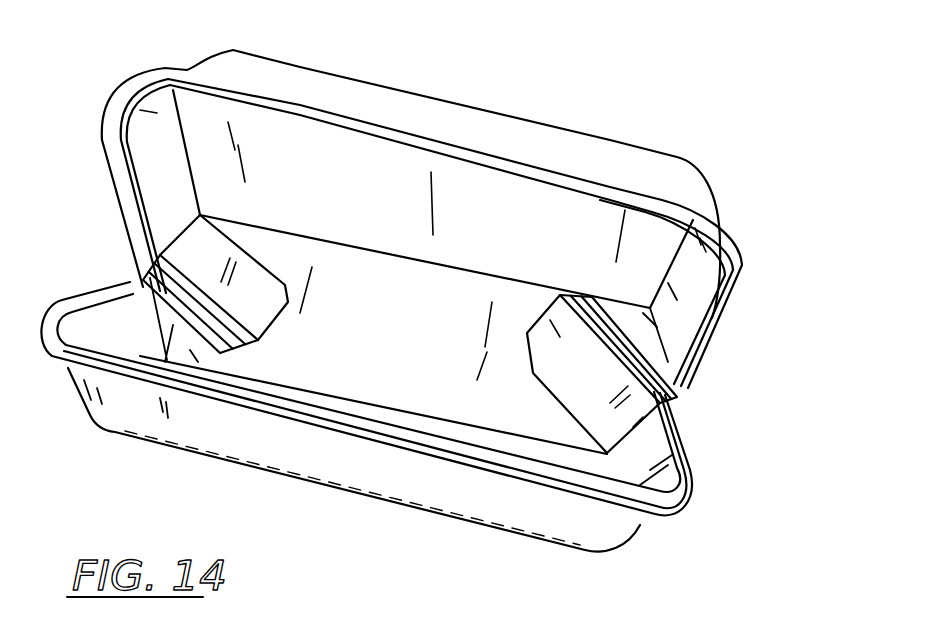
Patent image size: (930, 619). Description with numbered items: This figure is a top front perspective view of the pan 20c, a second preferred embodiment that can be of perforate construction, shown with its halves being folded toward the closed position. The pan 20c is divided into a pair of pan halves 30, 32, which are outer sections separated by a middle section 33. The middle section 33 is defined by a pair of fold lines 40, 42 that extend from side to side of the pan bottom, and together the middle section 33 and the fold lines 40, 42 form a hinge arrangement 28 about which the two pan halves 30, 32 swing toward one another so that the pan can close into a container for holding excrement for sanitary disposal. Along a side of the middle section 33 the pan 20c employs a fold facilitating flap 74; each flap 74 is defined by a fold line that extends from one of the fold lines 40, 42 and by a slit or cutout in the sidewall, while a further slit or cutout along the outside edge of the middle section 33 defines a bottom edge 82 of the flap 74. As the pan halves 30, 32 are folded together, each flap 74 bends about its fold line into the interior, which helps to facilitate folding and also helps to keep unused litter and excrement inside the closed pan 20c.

The pan 20c is at (574, 34).
The hinge arrangement 28 is at (436, 430).
The pan half 30 is at (428, 201).
The pan half 32 is at (528, 452).
The middle section 33 is at (397, 342).
The fold line 40 is at (458, 270).
The fold line 42 is at (423, 417).
The fold facilitating flap 74 is at (197, 348).
The bottom edge 82 is at (253, 257).